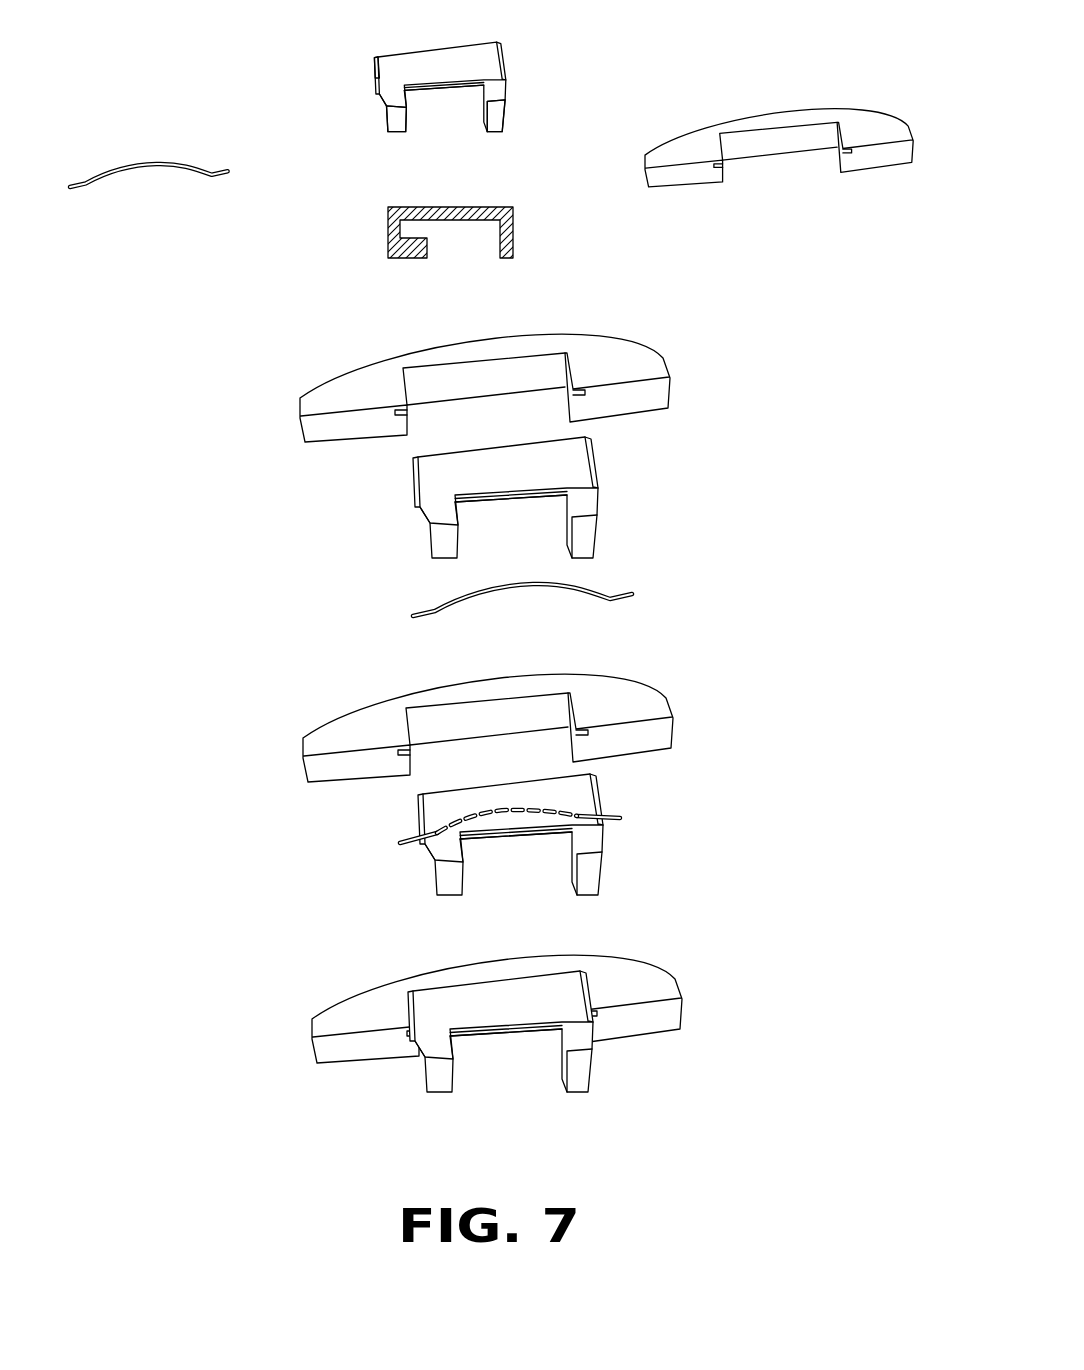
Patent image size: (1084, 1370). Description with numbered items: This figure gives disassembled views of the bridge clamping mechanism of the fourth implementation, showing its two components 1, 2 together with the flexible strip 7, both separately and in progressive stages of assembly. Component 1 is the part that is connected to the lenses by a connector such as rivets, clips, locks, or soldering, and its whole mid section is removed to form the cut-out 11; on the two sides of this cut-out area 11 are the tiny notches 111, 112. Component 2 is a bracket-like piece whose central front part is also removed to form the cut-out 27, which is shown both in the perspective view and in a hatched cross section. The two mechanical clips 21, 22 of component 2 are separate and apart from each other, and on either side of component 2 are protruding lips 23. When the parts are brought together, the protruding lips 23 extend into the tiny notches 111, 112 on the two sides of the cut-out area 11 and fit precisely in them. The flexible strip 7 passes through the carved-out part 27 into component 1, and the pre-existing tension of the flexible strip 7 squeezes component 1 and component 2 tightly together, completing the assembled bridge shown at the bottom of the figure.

The component 1 is at (863, 128).
The cut-out 11 is at (752, 140).
The notch 111 is at (847, 172).
The notch 112 is at (718, 178).
The component 2 is at (455, 123).
The mechanical clip 21 is at (390, 125).
The mechanical clip 22 is at (495, 120).
The protruding lip 23 is at (378, 62).
The cut-out 27 is at (378, 85).
The flexible strip 7 is at (165, 158).